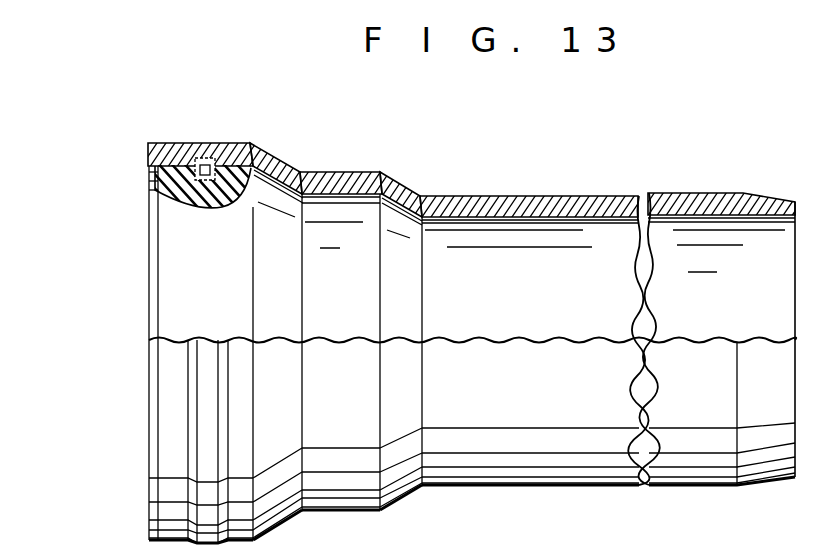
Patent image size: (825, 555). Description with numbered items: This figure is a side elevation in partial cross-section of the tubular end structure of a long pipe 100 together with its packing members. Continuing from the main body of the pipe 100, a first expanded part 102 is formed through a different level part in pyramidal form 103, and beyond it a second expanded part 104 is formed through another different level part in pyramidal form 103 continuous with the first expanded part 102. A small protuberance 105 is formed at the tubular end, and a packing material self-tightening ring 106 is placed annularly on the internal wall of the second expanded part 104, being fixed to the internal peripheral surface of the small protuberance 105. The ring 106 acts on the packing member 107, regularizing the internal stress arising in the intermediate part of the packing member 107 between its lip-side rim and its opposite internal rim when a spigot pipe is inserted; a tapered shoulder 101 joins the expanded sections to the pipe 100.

The pipe 100 is at (545, 195).
The tapered shoulder 101 is at (420, 194).
The first expanded part 102 is at (367, 172).
The different level part in pyramidal form 103 is at (303, 170).
The second expanded part 104 is at (163, 143).
The small protuberance 105 is at (200, 140).
The packing material self-tightening ring 106 is at (211, 158).
The packing member 107 is at (253, 280).